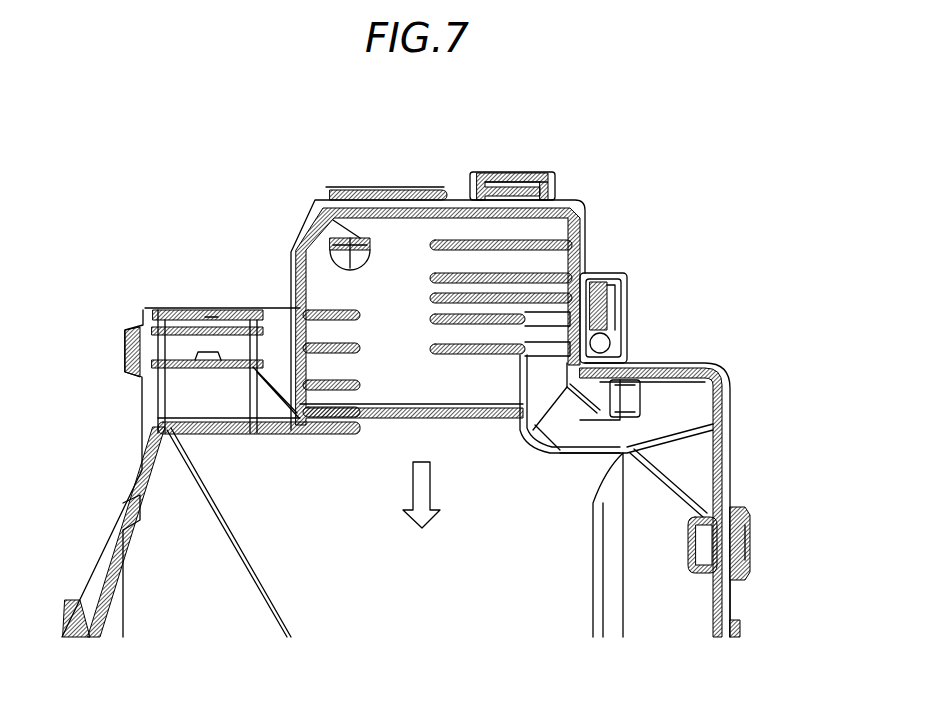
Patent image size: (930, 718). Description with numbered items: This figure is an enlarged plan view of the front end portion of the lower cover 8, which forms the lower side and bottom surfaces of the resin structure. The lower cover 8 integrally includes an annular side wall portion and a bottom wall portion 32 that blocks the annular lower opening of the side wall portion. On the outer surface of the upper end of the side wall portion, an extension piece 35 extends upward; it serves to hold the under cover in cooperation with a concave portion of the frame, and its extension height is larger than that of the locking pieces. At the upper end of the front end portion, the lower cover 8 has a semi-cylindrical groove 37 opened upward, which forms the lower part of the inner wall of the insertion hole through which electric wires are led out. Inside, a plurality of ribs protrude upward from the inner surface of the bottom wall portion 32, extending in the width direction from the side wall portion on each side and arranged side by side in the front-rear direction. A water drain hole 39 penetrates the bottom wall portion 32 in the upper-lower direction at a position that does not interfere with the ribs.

The lower cover 8 is at (627, 185).
The bottom wall portion 32 is at (522, 532).
The extension piece 35 is at (508, 172).
The groove 37 is at (202, 310).
The water drain hole 39 is at (350, 238).